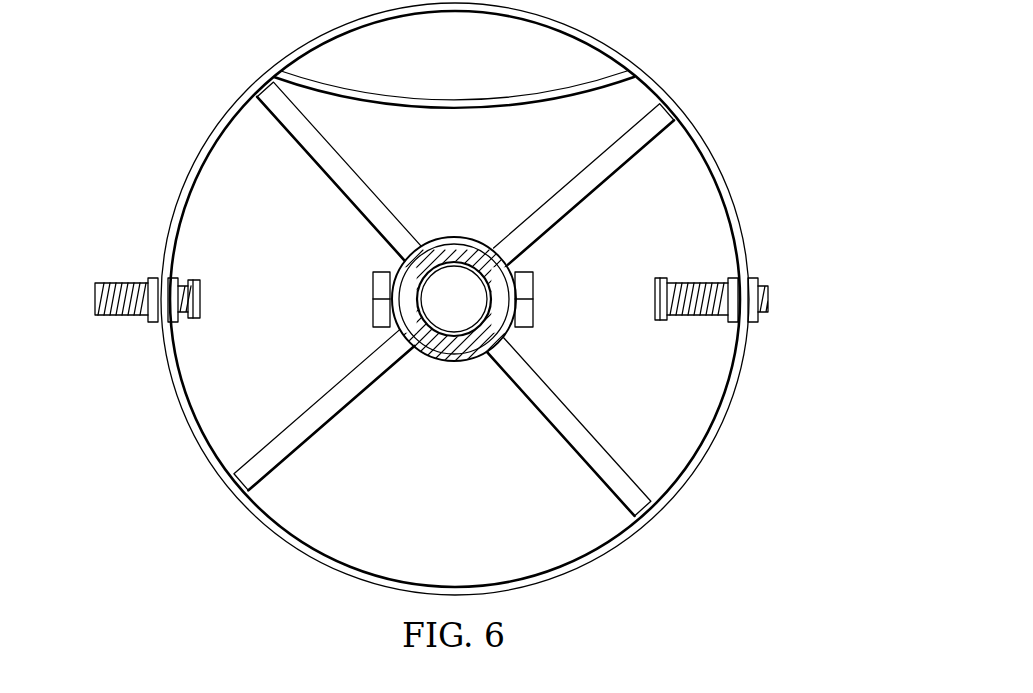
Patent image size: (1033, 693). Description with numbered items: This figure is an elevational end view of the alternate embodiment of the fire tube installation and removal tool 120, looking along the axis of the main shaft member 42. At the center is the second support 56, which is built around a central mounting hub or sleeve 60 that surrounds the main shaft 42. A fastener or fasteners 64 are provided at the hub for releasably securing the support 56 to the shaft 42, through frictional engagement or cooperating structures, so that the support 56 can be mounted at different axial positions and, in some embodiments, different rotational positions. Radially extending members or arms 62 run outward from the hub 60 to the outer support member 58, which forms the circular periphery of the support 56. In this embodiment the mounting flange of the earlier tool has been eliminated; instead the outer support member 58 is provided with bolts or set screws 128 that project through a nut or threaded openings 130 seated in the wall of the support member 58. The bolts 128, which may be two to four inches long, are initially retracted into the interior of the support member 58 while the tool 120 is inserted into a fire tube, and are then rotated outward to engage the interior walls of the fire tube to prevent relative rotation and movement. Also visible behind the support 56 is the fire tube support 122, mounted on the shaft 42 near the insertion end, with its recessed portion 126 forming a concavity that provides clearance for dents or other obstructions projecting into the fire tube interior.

The fire tube installation and removal tool 120 is at (705, 60).
The second support 56 is at (730, 163).
The outer support member 58 is at (738, 222).
The central mounting hub 60 is at (448, 240).
The main shaft member 42 is at (466, 343).
The radially extending arms 62 is at (325, 409).
The fastener 64 is at (537, 311).
The fire tube support 122 is at (521, 111).
The recessed portion 126 is at (454, 99).
The bolts or set screws 128 is at (118, 282).
The nut or threaded openings 130 is at (174, 322).